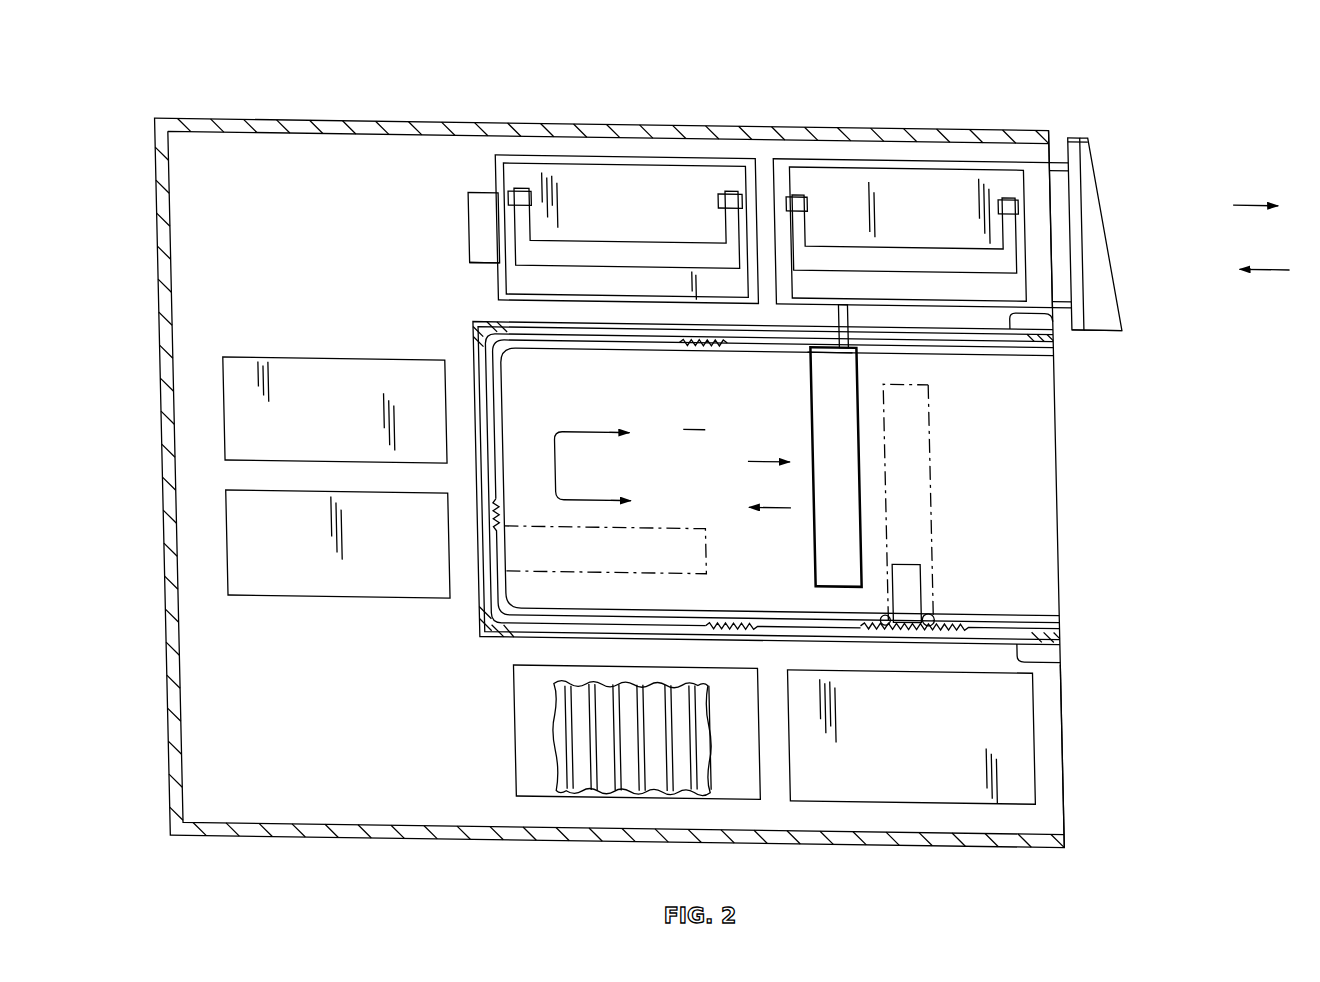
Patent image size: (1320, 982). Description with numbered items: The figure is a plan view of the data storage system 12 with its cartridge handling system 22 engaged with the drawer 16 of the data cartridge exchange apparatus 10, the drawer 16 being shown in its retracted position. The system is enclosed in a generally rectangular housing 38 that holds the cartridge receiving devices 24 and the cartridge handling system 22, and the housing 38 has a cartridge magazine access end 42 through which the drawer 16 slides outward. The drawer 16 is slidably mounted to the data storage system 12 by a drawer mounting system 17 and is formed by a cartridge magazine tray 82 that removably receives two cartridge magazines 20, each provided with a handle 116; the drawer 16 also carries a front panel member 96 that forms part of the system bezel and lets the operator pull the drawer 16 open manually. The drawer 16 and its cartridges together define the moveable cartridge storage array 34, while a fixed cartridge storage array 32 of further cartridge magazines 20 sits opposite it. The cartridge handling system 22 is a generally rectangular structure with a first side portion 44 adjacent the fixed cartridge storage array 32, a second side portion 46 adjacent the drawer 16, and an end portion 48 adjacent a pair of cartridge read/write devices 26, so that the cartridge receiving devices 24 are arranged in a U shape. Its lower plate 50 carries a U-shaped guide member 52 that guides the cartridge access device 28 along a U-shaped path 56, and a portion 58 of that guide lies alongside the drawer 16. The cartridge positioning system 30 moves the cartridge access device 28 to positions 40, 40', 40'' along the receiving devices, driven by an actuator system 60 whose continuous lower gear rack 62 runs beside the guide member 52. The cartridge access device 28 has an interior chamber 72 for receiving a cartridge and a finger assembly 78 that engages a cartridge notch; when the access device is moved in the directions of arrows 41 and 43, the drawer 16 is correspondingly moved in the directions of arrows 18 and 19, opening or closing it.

The data cartridge exchange apparatus 10 is at (1137, 119).
The data storage system 12 is at (156, 73).
The drawer 16 is at (1096, 173).
The drawer mounting system 17 is at (464, 199).
The arrow 18 is at (1244, 191).
The arrow 19 is at (1264, 257).
The cartridge magazine 20 is at (745, 189).
The cartridge handling system 22 is at (1065, 455).
The cartridge receiving devices 24 is at (498, 720).
The cartridge read/write devices 26 is at (242, 487).
The cartridge access device 28 is at (925, 487).
The cartridge positioning system 30 is at (1024, 598).
The fixed cartridge storage array 32 is at (1084, 725).
The moveable cartridge storage array 34 is at (1117, 226).
The housing 38 is at (255, 113).
The position 40 is at (803, 466).
The position 40' is at (620, 529).
The position 40'' is at (949, 503).
The arrow 41 is at (750, 457).
The cartridge magazine access end 42 is at (1045, 135).
The arrow 43 is at (765, 501).
The first side portion 44 is at (1046, 648).
The second side portion 46 is at (1043, 305).
The end portion 48 is at (462, 611).
The lower plate 50 is at (693, 413).
The lower U-shaped guide member 52 is at (492, 383).
The U-shaped path 56 is at (550, 452).
The portion of the lower guide member 58 is at (721, 333).
The actuator system 60 is at (922, 598).
The lower gear rack 62 is at (735, 607).
The interior chamber 72 is at (892, 587).
The finger assembly 78 is at (841, 310).
The cartridge magazine tray 82 is at (479, 232).
The front panel member 96 is at (1115, 301).
The handle 116 is at (660, 231).